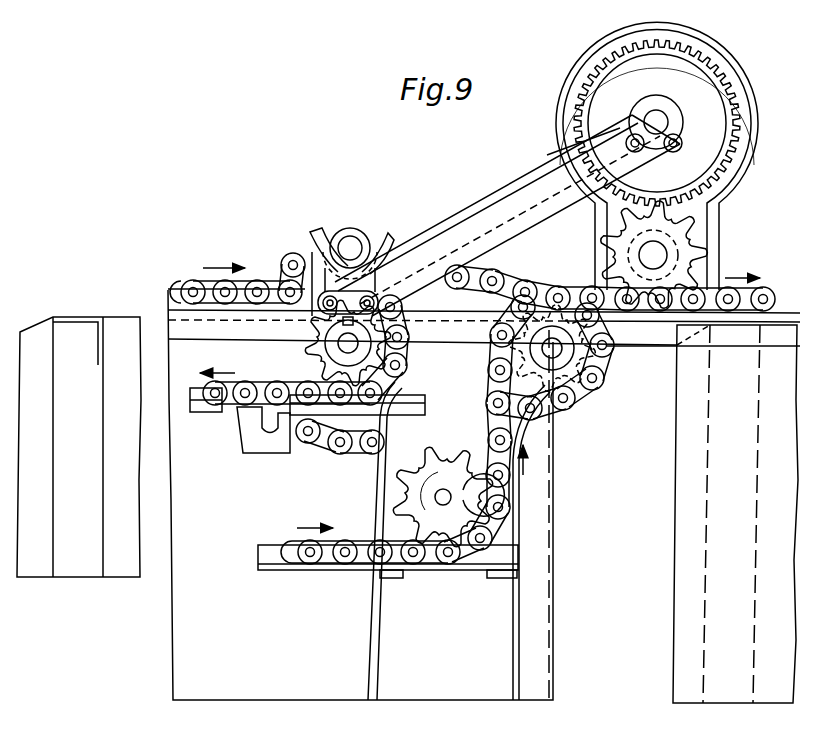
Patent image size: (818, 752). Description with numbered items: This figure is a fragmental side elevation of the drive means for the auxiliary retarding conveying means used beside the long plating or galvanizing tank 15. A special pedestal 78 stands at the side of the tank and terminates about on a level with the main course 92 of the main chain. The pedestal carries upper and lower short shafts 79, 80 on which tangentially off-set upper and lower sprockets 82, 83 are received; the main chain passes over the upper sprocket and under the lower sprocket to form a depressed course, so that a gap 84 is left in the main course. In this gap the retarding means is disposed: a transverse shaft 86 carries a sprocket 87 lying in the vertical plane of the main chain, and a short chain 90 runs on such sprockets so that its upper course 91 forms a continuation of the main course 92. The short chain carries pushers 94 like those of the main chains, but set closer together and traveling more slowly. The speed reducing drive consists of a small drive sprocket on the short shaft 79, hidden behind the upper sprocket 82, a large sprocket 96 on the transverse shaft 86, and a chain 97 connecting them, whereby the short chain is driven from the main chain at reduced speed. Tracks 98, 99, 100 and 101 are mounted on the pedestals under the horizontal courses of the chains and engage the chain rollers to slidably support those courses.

The plating or galvanizing tank 15 is at (114, 499).
The special pedestal 78 is at (360, 495).
The short shaft 79 is at (560, 354).
The short shaft 80 is at (455, 497).
The upper sprocket 82 is at (585, 365).
The lower sprocket 83 is at (468, 532).
The gap 84 is at (413, 400).
The transverse shaft 86 is at (348, 347).
The sprocket 87 is at (310, 346).
The short chain 90 is at (218, 410).
The upper course 91 is at (190, 285).
The main course 92 is at (744, 295).
The pusher 94 is at (310, 262).
The large sprocket 96 is at (428, 288).
The chain 97 is at (472, 280).
The track 98 is at (343, 572).
The track 99 is at (398, 418).
The track 100 is at (216, 312).
The track 101 is at (782, 316).